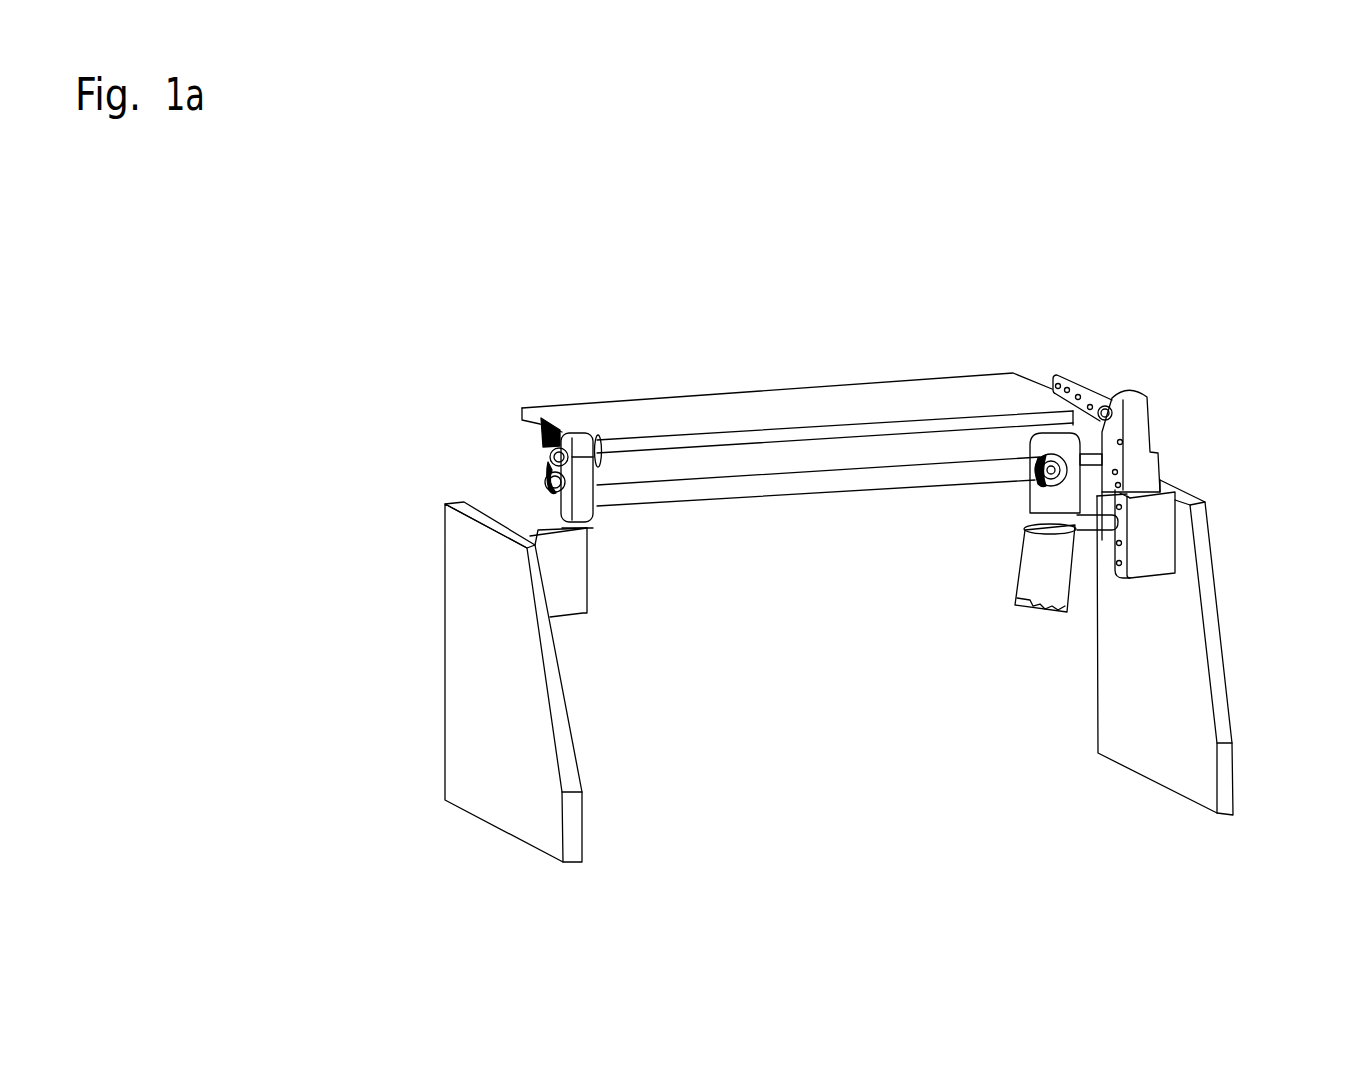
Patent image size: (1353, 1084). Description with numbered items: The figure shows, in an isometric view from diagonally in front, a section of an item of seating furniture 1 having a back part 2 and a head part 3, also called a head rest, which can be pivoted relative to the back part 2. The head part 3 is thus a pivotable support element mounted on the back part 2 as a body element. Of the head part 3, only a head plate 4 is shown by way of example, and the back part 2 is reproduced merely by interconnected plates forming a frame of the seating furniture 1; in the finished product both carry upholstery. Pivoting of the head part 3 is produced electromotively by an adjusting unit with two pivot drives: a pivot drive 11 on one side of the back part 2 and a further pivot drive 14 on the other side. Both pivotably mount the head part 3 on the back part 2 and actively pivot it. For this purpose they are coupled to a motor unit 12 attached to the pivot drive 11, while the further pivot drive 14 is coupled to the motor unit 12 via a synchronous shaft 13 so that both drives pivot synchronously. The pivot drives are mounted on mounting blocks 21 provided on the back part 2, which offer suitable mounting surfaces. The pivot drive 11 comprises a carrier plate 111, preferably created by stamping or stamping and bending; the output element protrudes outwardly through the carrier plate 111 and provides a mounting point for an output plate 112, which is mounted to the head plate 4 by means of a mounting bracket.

The seating furniture 1 is at (408, 868).
The back part 2 is at (465, 615).
The head part 3 is at (1142, 352).
The head plate 4 is at (872, 398).
The pivot drive 11 is at (1130, 464).
The motor unit 12 is at (1013, 540).
The synchronous shaft 13 is at (865, 473).
The further pivot drive 14 is at (578, 498).
The mounting block 21 is at (563, 580).
The carrier plate 111 is at (1117, 570).
The output plate 112 is at (1093, 405).